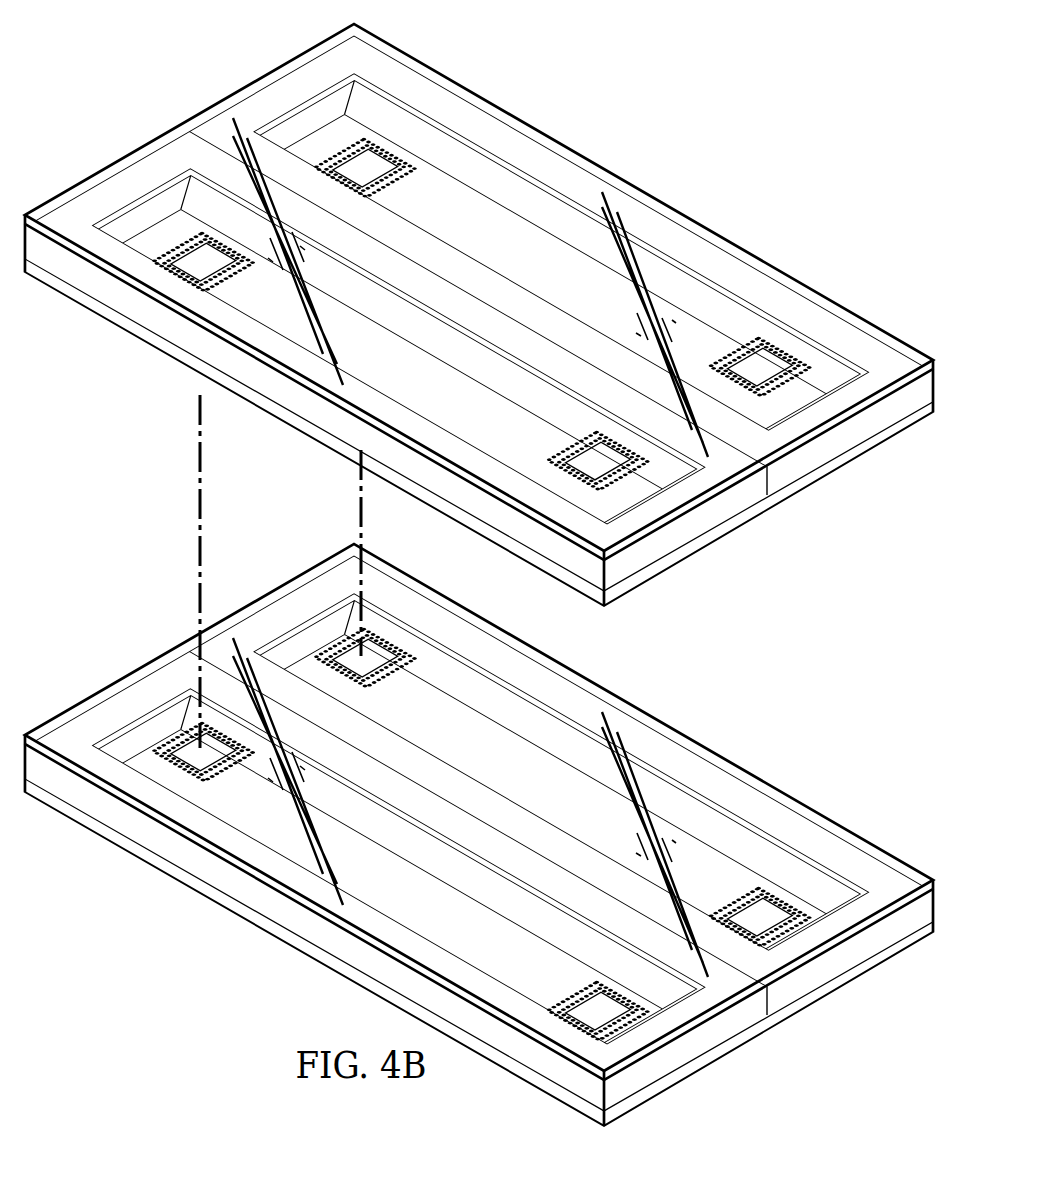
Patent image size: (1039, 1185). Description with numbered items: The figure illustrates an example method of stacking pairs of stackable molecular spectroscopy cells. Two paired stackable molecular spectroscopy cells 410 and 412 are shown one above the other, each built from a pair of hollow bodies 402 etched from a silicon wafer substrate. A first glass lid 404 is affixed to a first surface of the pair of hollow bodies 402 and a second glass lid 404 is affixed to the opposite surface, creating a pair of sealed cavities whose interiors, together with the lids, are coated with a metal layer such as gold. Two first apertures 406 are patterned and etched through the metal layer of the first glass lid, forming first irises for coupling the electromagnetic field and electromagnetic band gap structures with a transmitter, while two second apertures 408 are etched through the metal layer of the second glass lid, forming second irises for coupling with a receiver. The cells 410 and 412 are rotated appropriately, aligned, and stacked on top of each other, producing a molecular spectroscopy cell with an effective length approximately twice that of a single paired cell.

The hollow bodies 402 is at (195, 342).
The glass lid 404 is at (127, 276).
The first apertures 406 is at (777, 367).
The second apertures 408 is at (343, 177).
The paired stackable molecular spectroscopy cell 410 is at (668, 177).
The paired stackable molecular spectroscopy cell 412 is at (668, 697).